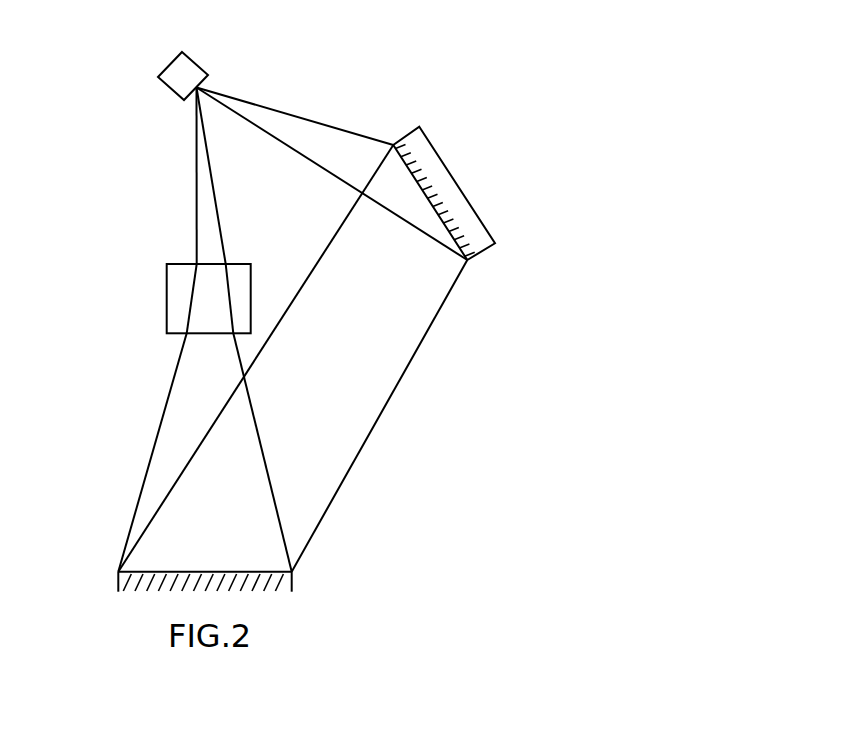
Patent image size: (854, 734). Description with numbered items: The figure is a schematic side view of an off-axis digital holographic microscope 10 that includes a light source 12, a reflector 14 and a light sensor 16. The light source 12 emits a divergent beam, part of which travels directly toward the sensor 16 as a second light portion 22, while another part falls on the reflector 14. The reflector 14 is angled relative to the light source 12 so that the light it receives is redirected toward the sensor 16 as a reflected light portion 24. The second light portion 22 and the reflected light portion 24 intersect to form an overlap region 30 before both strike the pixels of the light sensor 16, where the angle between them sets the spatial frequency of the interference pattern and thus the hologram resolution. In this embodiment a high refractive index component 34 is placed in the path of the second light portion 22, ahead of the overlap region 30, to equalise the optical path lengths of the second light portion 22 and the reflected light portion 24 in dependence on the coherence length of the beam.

The off-axis digital holographic microscope 10 is at (455, 78).
The light source 12 is at (190, 67).
The reflector 14 is at (438, 168).
The light sensor 16 is at (272, 577).
The second light portion 22 is at (208, 232).
The reflected light portion 24 is at (402, 335).
The overlap region 30 is at (178, 537).
The high refractive index component 34 is at (167, 298).